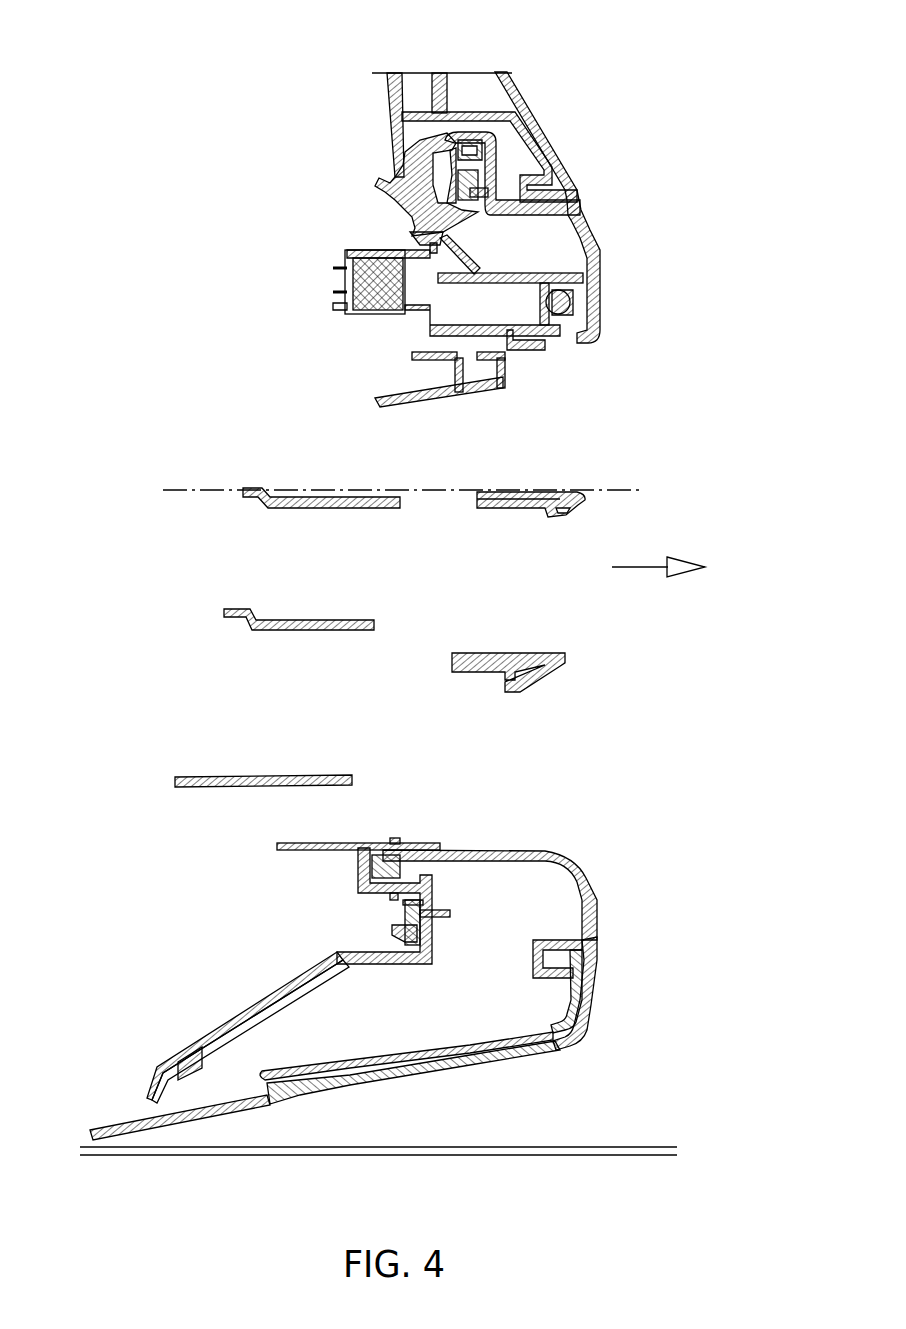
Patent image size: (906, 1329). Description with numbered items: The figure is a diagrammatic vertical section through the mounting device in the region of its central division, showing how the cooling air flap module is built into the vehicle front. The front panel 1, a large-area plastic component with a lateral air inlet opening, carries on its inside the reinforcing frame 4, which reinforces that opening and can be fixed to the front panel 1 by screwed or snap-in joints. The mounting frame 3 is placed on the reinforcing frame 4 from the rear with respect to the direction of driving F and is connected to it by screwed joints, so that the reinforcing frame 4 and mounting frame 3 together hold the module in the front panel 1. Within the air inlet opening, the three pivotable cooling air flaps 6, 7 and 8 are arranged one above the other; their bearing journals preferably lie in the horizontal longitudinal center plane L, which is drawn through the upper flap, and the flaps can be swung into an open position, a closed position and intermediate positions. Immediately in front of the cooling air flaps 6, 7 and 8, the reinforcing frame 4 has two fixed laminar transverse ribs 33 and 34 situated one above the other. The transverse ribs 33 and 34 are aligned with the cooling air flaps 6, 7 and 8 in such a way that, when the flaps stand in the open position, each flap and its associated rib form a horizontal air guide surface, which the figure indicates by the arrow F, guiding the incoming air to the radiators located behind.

The front panel 1 is at (572, 1032).
The mounting frame 3 is at (310, 848).
The reinforcing frame 4 is at (378, 960).
The cooling air flap 6 is at (298, 497).
The cooling air flap 7 is at (288, 622).
The cooling air flap 8 is at (262, 780).
The transverse rib 33 is at (510, 497).
The transverse rib 34 is at (478, 657).
The horizontal longitudinal center plane L is at (630, 486).
The direction of driving F is at (642, 563).